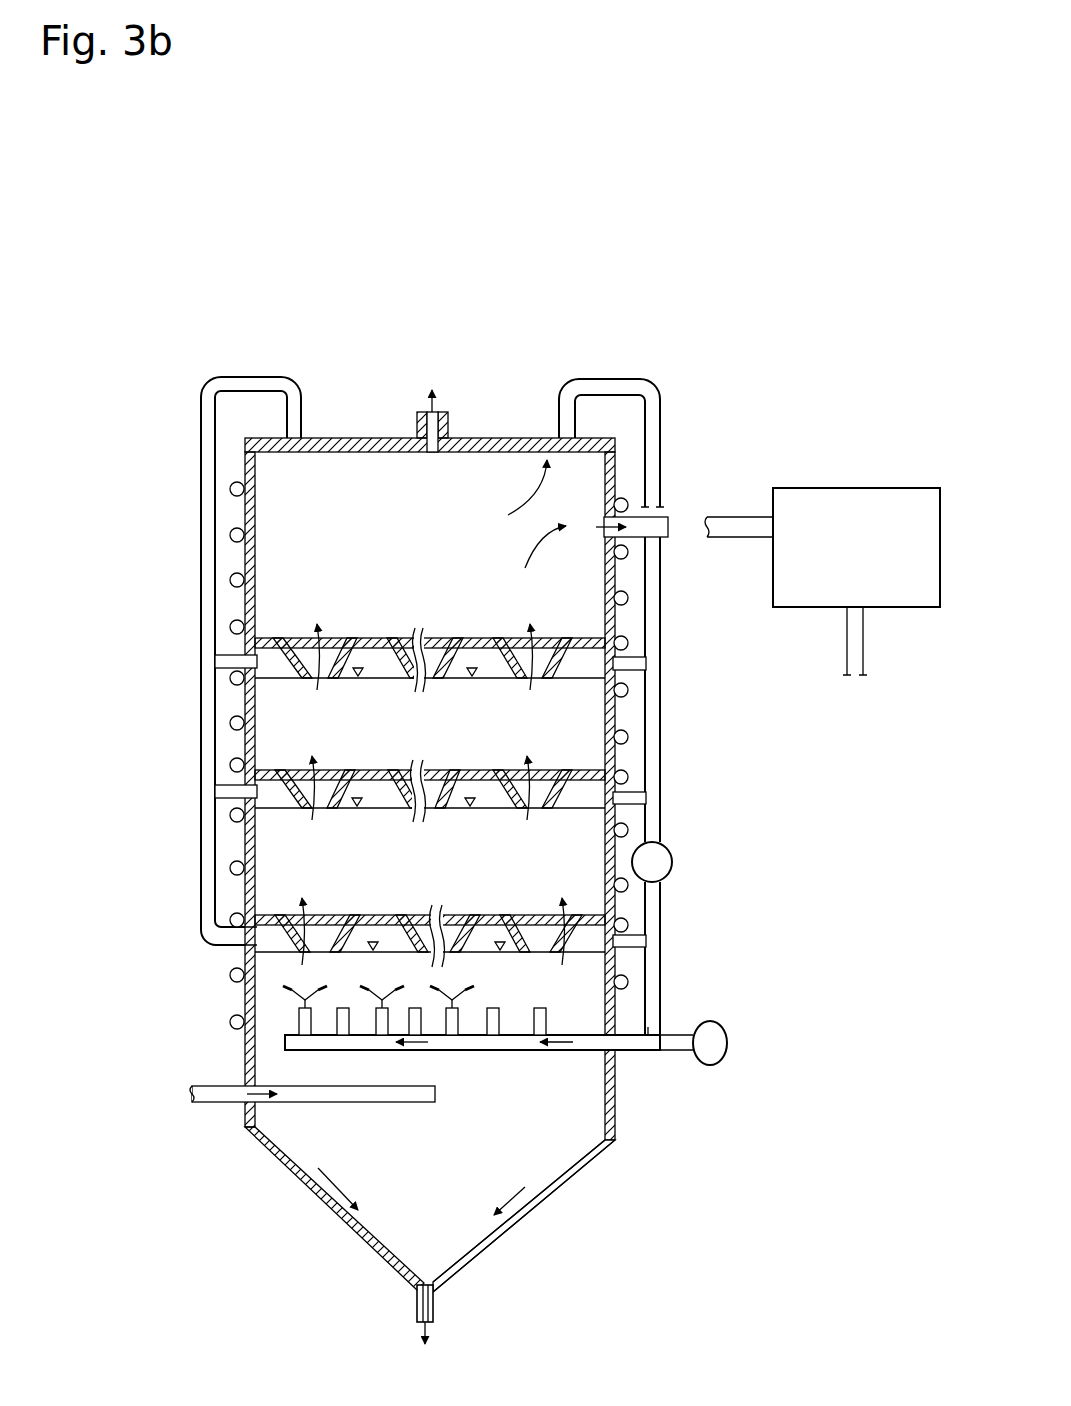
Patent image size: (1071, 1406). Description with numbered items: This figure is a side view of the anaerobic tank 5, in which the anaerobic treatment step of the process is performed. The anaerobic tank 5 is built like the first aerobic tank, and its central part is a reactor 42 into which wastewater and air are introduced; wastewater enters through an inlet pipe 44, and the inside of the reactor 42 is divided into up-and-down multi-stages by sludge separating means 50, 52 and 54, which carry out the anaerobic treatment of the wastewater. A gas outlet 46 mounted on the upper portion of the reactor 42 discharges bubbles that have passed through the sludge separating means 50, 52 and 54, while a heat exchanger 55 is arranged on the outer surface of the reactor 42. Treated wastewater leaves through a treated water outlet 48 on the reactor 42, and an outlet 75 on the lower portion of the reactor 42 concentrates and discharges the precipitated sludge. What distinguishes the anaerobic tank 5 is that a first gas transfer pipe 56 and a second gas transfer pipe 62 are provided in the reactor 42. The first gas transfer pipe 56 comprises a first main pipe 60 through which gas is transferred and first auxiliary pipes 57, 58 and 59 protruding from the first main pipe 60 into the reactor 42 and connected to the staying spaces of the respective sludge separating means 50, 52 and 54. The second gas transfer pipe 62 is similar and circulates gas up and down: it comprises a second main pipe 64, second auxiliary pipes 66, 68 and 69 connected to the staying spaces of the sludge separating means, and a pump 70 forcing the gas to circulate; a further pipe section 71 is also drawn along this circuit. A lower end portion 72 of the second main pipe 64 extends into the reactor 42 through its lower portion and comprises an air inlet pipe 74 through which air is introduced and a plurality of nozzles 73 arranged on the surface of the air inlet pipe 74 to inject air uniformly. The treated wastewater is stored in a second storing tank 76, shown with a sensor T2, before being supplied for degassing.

The anaerobic tank 5 is at (669, 403).
The reactor 42 is at (660, 710).
The inlet pipe 44 is at (205, 1100).
The gas outlet 46 is at (446, 430).
The treated water outlet 48 is at (661, 516).
The sludge separating means 50 is at (240, 930).
The sludge separating means 52 is at (248, 815).
The sludge separating means 54 is at (292, 618).
The heat exchanger 55 is at (235, 533).
The first gas transfer pipe 56 is at (191, 703).
The first auxiliary pipe 57 is at (230, 955).
The first auxiliary pipe 58 is at (233, 769).
The first auxiliary pipe 59 is at (228, 656).
The first main pipe 60 is at (269, 389).
The second gas transfer pipe 62 is at (671, 820).
The second main pipe 64 is at (592, 394).
The second auxiliary pipe 66 is at (642, 655).
The second auxiliary pipe 68 is at (648, 760).
The second auxiliary pipe 69 is at (660, 960).
The pump 70 is at (673, 862).
The pipe 71 is at (657, 912).
The lower end portion 72 is at (685, 1026).
The nozzles 73 is at (299, 1020).
The air inlet pipe 74 is at (285, 1040).
The outlet 75 is at (436, 1311).
The second storing tank 76 is at (851, 489).
The temperature sensor T2 is at (856, 676).